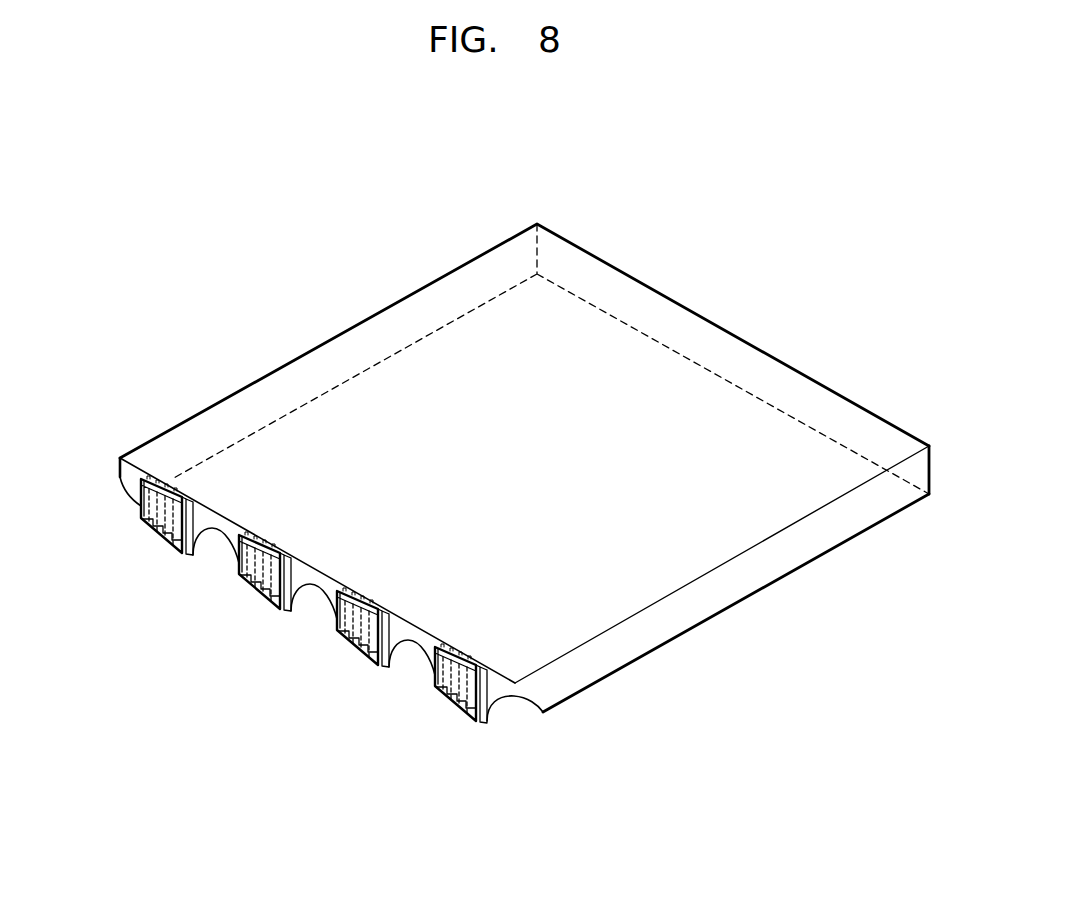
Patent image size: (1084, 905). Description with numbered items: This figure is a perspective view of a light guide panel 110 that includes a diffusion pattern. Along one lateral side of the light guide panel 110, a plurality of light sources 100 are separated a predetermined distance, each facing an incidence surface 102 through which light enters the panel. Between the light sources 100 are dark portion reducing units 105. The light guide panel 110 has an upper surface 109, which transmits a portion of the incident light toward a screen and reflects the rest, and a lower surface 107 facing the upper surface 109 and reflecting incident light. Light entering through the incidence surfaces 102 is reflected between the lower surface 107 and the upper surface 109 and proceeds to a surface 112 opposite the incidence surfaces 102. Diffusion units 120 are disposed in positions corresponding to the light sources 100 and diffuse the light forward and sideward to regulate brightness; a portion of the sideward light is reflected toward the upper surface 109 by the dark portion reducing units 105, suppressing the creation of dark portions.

The light source 100 is at (158, 540).
The incidence surface 102 is at (505, 688).
The dark portion reducing unit 105 is at (298, 590).
The lower surface 107 is at (870, 530).
The upper surface 109 is at (870, 438).
The light guide panel 110 is at (797, 326).
The surface opposite to the incidence surfaces 112 is at (667, 292).
The diffusion unit 120 is at (138, 500).